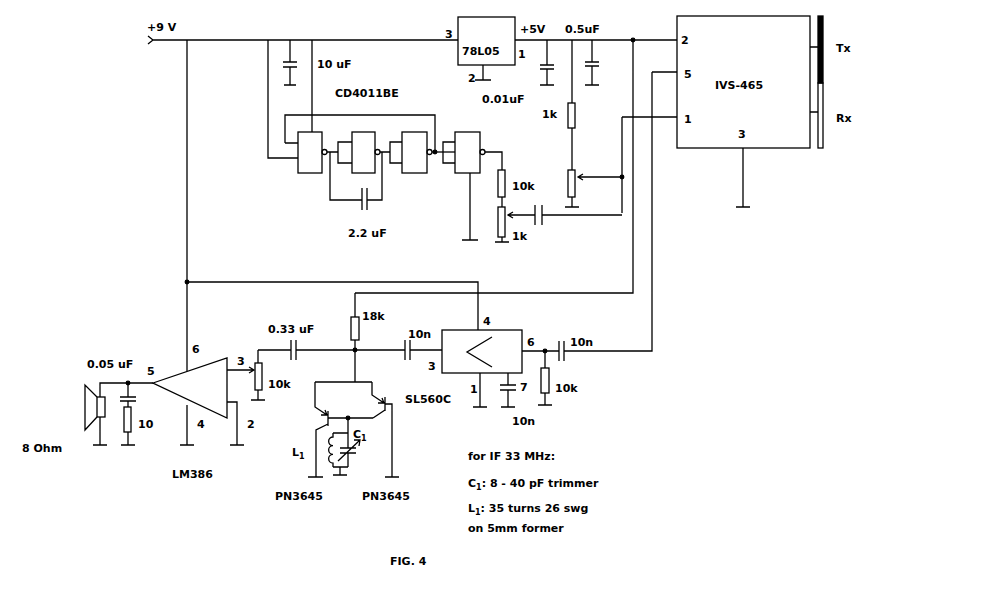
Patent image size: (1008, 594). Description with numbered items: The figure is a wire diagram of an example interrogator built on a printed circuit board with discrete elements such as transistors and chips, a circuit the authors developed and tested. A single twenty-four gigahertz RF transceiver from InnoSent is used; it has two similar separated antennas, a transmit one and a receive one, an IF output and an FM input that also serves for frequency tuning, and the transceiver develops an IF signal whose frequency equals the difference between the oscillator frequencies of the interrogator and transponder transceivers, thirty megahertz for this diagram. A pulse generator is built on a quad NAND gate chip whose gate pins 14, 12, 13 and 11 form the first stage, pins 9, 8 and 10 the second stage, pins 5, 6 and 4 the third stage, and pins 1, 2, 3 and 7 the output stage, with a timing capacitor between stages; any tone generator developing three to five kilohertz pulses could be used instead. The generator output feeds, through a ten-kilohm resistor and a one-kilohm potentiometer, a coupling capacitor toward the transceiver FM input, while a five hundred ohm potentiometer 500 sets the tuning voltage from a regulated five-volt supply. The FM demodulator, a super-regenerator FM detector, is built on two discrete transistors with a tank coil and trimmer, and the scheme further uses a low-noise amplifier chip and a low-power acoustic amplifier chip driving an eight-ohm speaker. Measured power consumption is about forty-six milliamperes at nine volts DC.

The CD4011BE supply pin 14 is at (360, 157).
The NAND gate input pin 12 is at (360, 157).
The NAND gate input pin 13 is at (360, 157).
The NAND gate output pin 11 is at (360, 157).
The NAND gate input pin 9 is at (367, 162).
The NAND gate input pin 8 is at (367, 162).
The NAND gate output pin 10 is at (367, 162).
The NAND gate input pin 5 is at (422, 152).
The NAND gate input pin 6 is at (422, 152).
The NAND gate output pin 4 is at (422, 152).
The NAND gate input pin 1 is at (472, 186).
The NAND gate input pin 2 is at (472, 186).
The NAND gate output pin 3 is at (472, 186).
The CD4011BE ground pin 7 is at (472, 186).
The 500 ohm potentiometer 500 is at (594, 186).